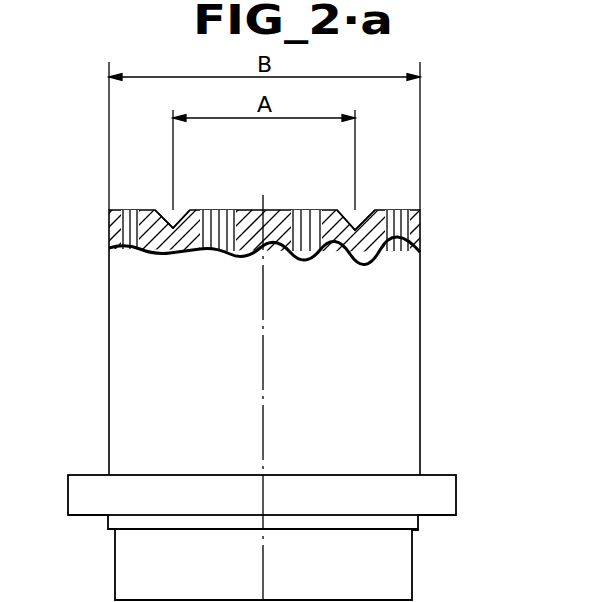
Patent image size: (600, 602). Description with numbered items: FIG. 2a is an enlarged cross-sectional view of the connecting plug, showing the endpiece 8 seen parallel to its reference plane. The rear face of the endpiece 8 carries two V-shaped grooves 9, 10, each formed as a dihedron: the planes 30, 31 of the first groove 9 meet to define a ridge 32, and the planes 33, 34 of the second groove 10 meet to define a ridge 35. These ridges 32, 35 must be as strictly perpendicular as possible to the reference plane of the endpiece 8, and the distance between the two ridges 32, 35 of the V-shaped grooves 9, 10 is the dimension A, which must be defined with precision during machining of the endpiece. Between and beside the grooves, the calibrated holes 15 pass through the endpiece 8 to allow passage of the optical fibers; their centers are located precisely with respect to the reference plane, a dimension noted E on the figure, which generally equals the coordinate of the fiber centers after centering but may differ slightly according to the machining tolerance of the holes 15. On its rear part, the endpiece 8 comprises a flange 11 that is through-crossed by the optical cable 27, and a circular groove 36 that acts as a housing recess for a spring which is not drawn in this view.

The endpiece 8 is at (405, 362).
The V-shaped groove 9 is at (175, 209).
The V-shaped groove 10 is at (348, 211).
The flange 11 is at (458, 490).
The calibrated holes 15 is at (140, 209).
The optical cable 27 is at (400, 583).
The plane of dihedron 30 is at (166, 254).
The plane of dihedron 31 is at (183, 249).
The ridge 32 is at (177, 255).
The plane of dihedron 33 is at (343, 232).
The plane of dihedron 34 is at (370, 225).
The ridge 35 is at (360, 240).
The circular groove 36 is at (80, 519).